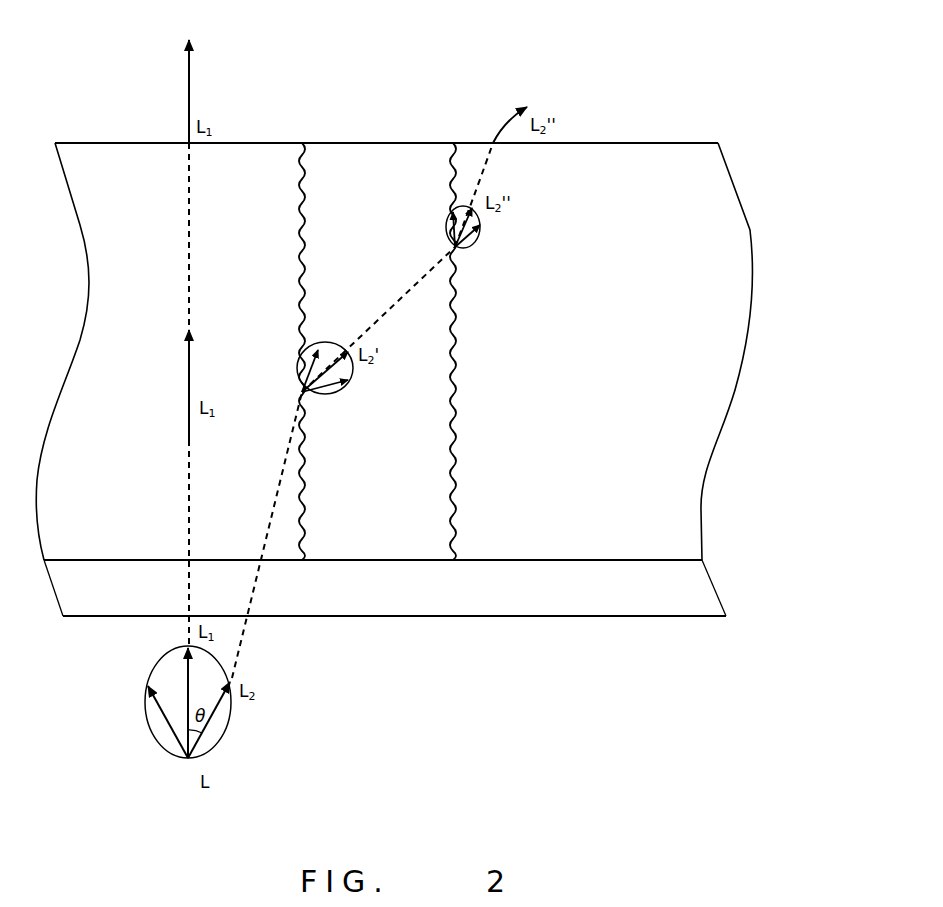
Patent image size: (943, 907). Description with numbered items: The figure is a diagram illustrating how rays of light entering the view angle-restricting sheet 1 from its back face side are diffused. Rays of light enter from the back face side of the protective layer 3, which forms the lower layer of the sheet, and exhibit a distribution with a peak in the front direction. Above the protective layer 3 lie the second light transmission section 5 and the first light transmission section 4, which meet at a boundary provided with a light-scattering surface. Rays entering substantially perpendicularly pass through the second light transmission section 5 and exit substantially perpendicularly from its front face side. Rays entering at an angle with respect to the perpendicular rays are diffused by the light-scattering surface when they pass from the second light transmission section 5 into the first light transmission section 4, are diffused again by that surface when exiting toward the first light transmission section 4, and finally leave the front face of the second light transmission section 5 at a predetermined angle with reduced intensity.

The view angle-restricting sheet 1 is at (746, 80).
The protective layer 3 is at (697, 581).
The first light transmission section 4 is at (358, 190).
The second light transmission section 5 is at (107, 190).